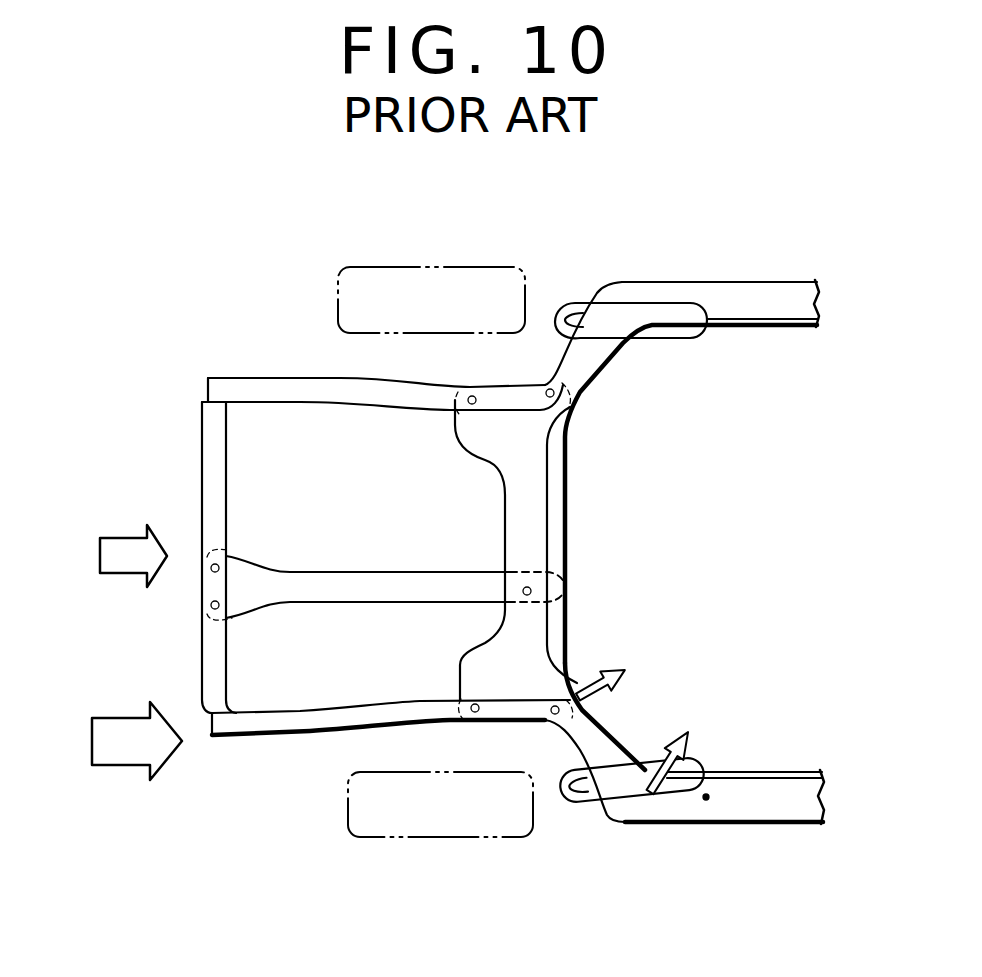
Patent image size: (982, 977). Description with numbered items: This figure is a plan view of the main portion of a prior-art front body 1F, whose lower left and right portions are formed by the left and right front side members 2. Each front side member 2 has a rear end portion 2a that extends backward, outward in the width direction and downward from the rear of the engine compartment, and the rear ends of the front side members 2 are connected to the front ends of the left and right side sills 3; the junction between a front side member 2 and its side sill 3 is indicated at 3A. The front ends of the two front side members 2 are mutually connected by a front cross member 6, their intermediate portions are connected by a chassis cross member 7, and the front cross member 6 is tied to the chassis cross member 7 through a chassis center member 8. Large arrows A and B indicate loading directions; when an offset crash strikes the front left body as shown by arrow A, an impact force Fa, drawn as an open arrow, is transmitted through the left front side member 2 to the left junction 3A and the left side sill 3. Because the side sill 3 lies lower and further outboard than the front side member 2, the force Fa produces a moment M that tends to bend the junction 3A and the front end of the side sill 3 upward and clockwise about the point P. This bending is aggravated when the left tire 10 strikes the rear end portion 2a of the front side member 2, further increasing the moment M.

The front body 1F is at (205, 370).
The front side member 2 is at (313, 372).
The rear end portion of front side member 2a is at (600, 357).
The side sill 3 is at (763, 268).
The junction 3A is at (615, 305).
The front cross member 6 is at (205, 452).
The chassis cross member 7 is at (512, 513).
The chassis center member 8 is at (339, 590).
The tire 10 is at (413, 828).
The arrow indicating offset crash A is at (118, 741).
The arrow B is at (113, 556).
The impact force Fa is at (613, 648).
The moment M is at (682, 713).
The point P is at (705, 800).